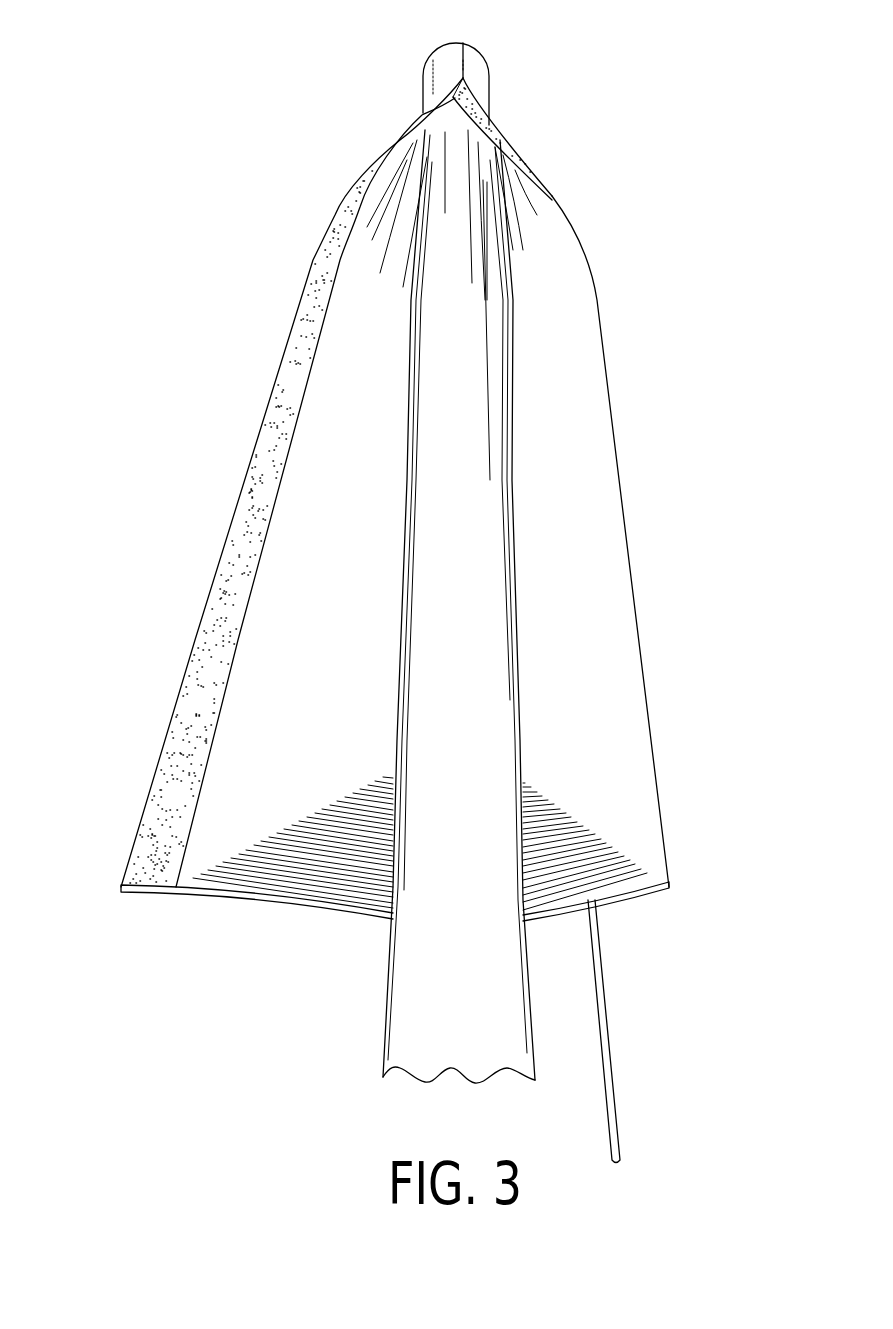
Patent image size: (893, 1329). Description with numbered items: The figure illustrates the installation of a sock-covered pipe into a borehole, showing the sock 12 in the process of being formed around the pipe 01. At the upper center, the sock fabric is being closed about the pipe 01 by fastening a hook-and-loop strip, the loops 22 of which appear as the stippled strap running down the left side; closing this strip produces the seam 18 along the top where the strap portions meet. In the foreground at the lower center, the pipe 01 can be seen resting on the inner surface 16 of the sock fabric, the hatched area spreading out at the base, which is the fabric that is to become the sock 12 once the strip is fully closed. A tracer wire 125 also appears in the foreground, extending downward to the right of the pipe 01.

The sock 12 is at (442, 62).
The seam 18 is at (463, 78).
The loops 22 is at (192, 695).
The inner surface 16 is at (245, 810).
The pipe 01 is at (427, 1010).
The tracer wire 125 is at (615, 1098).